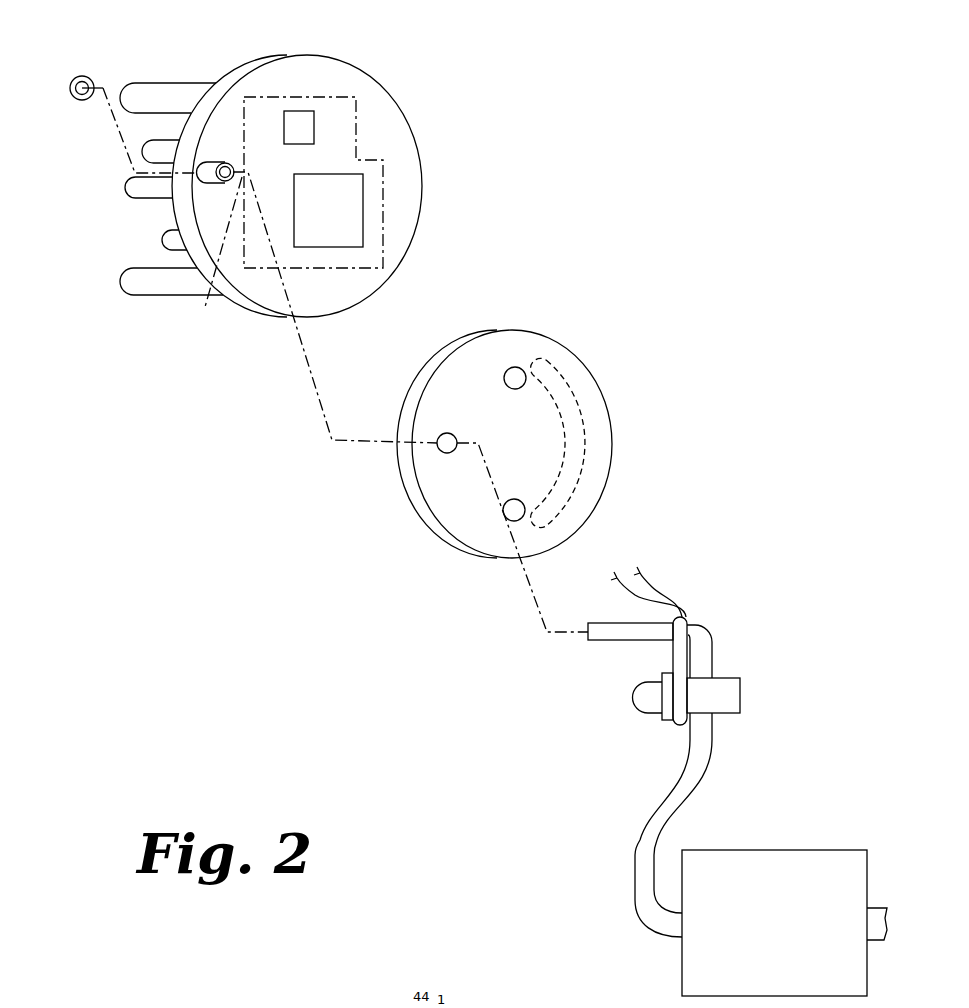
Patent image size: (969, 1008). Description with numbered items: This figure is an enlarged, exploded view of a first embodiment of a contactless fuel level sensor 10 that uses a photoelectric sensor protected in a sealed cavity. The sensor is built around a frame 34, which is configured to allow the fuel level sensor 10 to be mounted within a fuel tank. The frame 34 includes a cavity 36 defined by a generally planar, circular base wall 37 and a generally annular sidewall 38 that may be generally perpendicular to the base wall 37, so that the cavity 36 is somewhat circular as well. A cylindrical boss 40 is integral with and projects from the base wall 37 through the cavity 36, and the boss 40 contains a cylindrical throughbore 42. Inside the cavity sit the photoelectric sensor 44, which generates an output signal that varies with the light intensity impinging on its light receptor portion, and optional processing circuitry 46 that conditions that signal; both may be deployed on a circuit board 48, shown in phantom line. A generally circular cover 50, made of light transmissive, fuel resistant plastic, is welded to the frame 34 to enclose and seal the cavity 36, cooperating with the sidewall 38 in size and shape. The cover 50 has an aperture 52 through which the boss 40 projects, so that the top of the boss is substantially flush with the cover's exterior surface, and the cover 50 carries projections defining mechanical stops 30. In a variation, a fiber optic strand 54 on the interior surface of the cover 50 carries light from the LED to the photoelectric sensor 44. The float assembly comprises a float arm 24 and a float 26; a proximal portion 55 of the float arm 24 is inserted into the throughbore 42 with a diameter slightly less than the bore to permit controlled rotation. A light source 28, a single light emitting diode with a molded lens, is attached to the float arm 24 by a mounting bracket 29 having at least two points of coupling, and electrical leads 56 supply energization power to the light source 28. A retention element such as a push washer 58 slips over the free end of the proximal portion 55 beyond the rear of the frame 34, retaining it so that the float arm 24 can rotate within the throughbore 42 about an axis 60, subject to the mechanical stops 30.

The fuel level sensor 10 is at (492, 120).
The float arm 24 is at (680, 793).
The float 26 is at (770, 872).
The light source 28 is at (643, 703).
The mounting bracket 29 is at (682, 658).
The mechanical stops 30 is at (515, 377).
The frame 34 is at (425, 215).
The cavity 36 is at (330, 295).
The base wall 37 is at (323, 73).
The sidewall 38 is at (262, 62).
The boss 40 is at (219, 163).
The throughbore 42 is at (216, 181).
The photoelectric sensor 44 is at (307, 127).
The processing circuitry 46 is at (355, 183).
The circuit board 48 is at (362, 113).
The cover 50 is at (613, 412).
The aperture 52 is at (445, 455).
The fiber optic strand 54 is at (585, 443).
The proximal portion 55 is at (603, 632).
The electrical leads 56 is at (660, 583).
The push washer 58 is at (83, 72).
The axis 60 is at (217, 256).